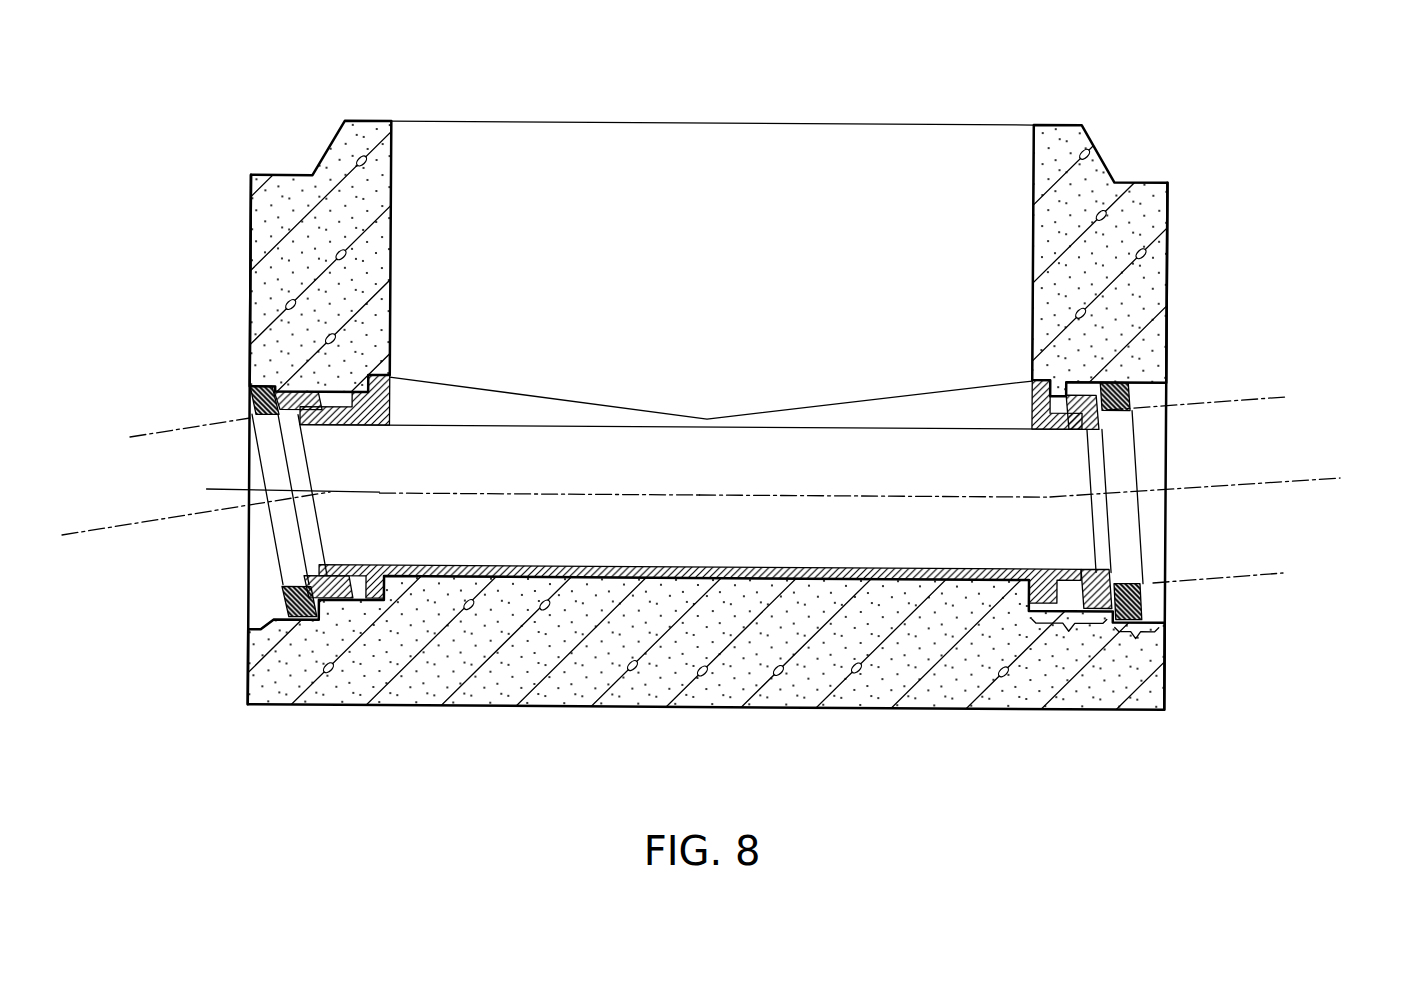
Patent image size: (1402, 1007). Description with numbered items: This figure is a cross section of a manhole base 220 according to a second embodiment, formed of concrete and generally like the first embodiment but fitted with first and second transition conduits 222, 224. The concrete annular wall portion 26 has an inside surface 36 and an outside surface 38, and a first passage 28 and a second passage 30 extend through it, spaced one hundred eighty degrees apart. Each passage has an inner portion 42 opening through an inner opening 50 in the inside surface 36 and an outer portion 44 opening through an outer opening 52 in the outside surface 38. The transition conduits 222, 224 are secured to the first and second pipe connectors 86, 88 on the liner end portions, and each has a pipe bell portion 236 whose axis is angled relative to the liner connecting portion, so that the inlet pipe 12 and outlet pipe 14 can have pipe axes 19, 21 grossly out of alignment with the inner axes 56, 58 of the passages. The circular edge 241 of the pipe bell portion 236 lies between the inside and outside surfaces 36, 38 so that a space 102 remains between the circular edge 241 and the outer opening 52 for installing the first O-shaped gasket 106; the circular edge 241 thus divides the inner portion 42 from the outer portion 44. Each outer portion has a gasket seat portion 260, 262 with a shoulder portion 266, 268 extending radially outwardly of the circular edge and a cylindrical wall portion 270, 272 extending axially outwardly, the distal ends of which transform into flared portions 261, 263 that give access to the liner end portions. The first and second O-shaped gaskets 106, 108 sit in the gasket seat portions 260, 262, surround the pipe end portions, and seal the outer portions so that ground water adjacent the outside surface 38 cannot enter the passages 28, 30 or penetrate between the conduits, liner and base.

The manhole base 220 is at (840, 100).
The annular wall portion 26 is at (1075, 143).
The inside surface 36 is at (1033, 165).
The outside surface 38 is at (1168, 206).
The second transition conduit 224 is at (343, 395).
The second pipe connector 88 is at (386, 378).
The shoulder portion 266 is at (1087, 380).
The first transition conduit 222 is at (1067, 395).
The first pipe connector 86 is at (1032, 380).
The circular edge 241 is at (1130, 382).
The space 102 is at (1127, 386).
The first passage 28 is at (1180, 391).
The inlet pipe 12 is at (1278, 400).
The shoulder portion 268 is at (250, 388).
The second passage 30 is at (241, 407).
The outlet pipe 14 is at (140, 437).
The cylindrical wall portion 272 is at (250, 418).
The gasket seat portion 262 is at (252, 432).
The pipe axis 21 is at (118, 525).
The inner axis 58 is at (400, 495).
The inner axis 56 is at (1012, 495).
The pipe axis 19 is at (1340, 478).
The gasket seat portion 260 is at (1110, 408).
The cylindrical wall portion 270 is at (1113, 412).
The inner opening 50 is at (998, 545).
The pipe bell portion 236 is at (330, 607).
The first O-shaped gasket 106 is at (1147, 580).
The outer opening 52 is at (1174, 596).
The flared portion 261 is at (1145, 626).
The outer portion 44 is at (1168, 667).
The second O-shaped gasket 108 is at (285, 586).
The flared portion 263 is at (260, 636).
The inner portion 42 is at (1065, 628).